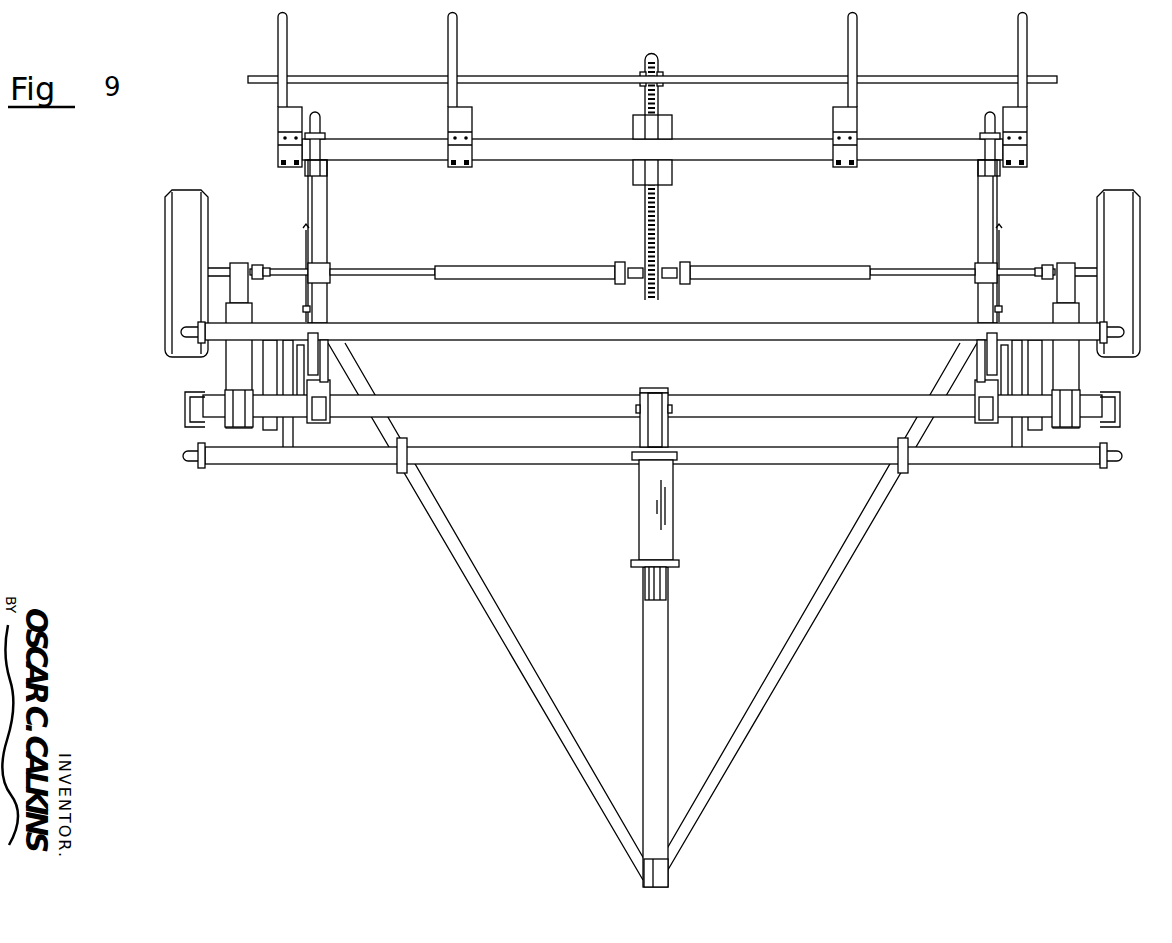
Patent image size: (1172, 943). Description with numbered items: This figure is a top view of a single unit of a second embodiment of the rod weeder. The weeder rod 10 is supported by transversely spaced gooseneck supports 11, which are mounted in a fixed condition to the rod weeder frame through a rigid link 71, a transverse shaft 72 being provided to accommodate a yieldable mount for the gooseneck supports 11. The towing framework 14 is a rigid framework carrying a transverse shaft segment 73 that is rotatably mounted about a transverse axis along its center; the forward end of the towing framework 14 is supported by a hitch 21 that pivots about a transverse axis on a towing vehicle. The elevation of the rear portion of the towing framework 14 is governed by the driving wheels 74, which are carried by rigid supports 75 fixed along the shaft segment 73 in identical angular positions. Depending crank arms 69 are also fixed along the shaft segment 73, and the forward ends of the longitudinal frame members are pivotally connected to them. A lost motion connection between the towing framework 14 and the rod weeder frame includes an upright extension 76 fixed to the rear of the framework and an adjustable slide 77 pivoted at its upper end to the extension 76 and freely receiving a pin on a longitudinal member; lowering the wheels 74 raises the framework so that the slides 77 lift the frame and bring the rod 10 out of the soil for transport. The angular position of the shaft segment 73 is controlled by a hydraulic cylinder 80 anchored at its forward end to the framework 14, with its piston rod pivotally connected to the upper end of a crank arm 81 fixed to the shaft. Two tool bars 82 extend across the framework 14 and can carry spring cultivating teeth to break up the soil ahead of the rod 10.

The rod 10 is at (394, 81).
The gooseneck supports 11 is at (320, 28).
The towing framework 14 is at (435, 541).
The hitch 21 is at (669, 875).
The crank arms 69 is at (324, 365).
The rigid link 71 is at (329, 210).
The transverse shaft 72 is at (367, 150).
The transverse shaft segment 73 is at (558, 398).
The driving wheels 74 is at (176, 262).
The rigid supports 75 is at (236, 360).
The upright extension 76 is at (321, 340).
The adjustable slide 77 is at (307, 258).
The hydraulic cylinder 80 is at (647, 518).
The crank arm 81 is at (653, 398).
The tool bars 82 is at (543, 332).